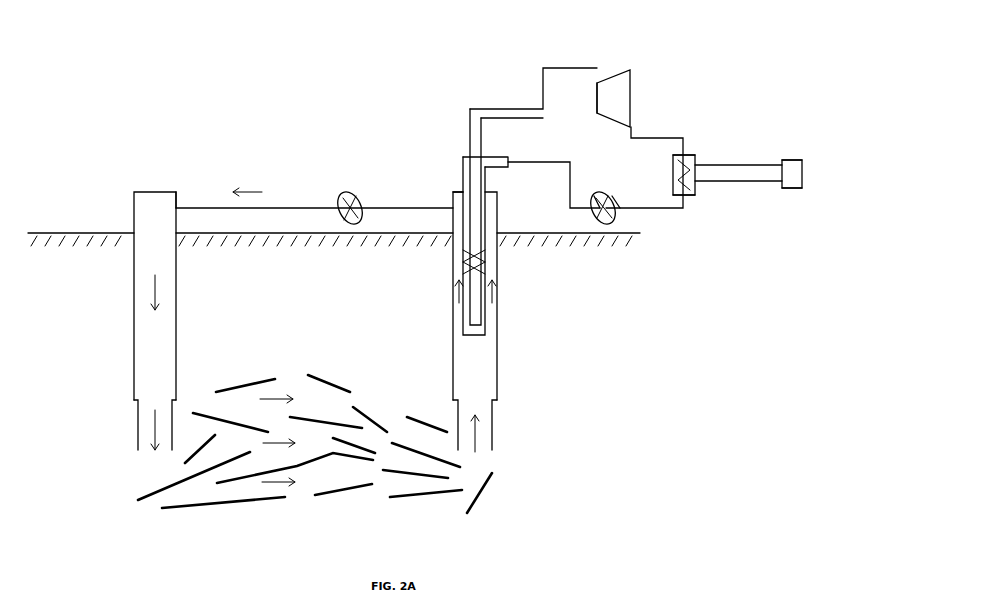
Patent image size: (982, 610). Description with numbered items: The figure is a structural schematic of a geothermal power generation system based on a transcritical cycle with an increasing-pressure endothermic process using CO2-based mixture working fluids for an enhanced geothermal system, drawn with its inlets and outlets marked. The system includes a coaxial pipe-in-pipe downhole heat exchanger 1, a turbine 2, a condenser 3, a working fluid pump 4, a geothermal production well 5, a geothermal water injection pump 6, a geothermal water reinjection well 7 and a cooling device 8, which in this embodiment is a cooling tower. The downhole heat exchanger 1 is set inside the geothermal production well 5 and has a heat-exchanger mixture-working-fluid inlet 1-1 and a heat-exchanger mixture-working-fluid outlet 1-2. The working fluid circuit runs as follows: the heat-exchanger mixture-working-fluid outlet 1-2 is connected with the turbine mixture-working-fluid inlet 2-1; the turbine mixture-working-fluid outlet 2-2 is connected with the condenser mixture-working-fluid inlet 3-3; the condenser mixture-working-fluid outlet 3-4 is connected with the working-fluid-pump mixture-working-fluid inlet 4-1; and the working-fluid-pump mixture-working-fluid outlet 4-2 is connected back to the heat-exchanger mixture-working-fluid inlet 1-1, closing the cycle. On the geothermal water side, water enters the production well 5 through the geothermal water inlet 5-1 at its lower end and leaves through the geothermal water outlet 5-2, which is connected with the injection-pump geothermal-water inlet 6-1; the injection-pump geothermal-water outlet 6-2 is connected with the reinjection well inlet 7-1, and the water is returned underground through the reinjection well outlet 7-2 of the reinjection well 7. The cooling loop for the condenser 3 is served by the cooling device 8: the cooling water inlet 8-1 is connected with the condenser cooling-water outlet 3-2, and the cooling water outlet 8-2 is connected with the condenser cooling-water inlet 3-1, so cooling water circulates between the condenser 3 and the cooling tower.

The coaxial pipe-in-pipe downhole heat exchanger 1 is at (475, 217).
The heat-exchanger mixture-working-fluid inlet 1-1 is at (510, 163).
The heat-exchanger mixture-working-fluid outlet 1-2 is at (512, 109).
The turbine 2 is at (615, 100).
The turbine mixture-working-fluid inlet 2-1 is at (597, 83).
The turbine mixture-working-fluid outlet 2-2 is at (631, 127).
The condenser 3 is at (695, 165).
The condenser cooling-water inlet 3-1 is at (697, 165).
The condenser cooling-water outlet 3-2 is at (697, 185).
The condenser mixture-working-fluid inlet 3-3 is at (683, 160).
The condenser mixture-working-fluid outlet 3-4 is at (690, 197).
The working fluid pump 4 is at (615, 217).
The working-fluid-pump mixture-working-fluid inlet 4-1 is at (615, 203).
The working-fluid-pump mixture-working-fluid outlet 4-2 is at (597, 192).
The geothermal production well 5 is at (475, 362).
The geothermal water inlet 5-1 is at (457, 432).
The geothermal water outlet 5-2 is at (453, 208).
The geothermal water injection pump 6 is at (343, 200).
The injection-pump geothermal-water inlet 6-1 is at (360, 200).
The injection-pump geothermal-water outlet 6-2 is at (337, 208).
The geothermal water reinjection well 7 is at (155, 212).
The reinjection well inlet 7-1 is at (177, 208).
The reinjection well outlet 7-2 is at (153, 452).
The cooling device 8 is at (790, 172).
The cooling water inlet 8-1 is at (783, 188).
The cooling water outlet 8-2 is at (785, 160).